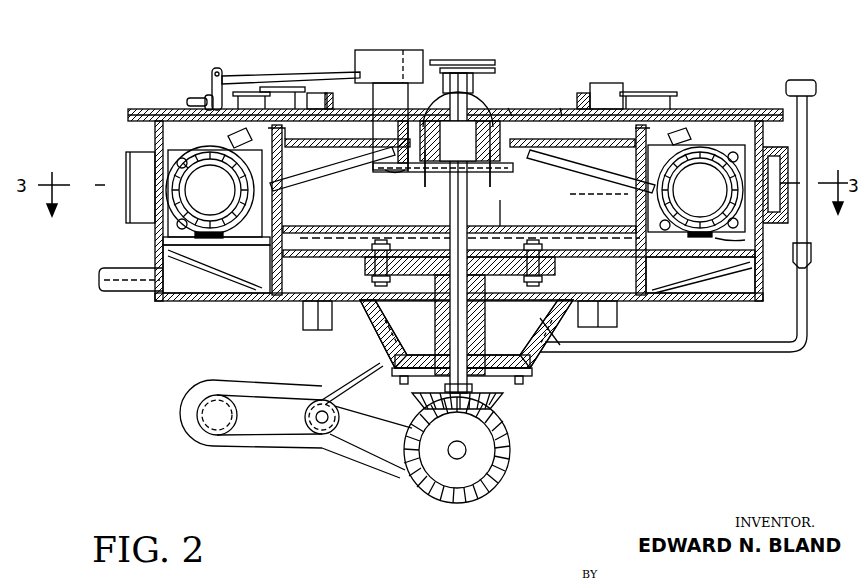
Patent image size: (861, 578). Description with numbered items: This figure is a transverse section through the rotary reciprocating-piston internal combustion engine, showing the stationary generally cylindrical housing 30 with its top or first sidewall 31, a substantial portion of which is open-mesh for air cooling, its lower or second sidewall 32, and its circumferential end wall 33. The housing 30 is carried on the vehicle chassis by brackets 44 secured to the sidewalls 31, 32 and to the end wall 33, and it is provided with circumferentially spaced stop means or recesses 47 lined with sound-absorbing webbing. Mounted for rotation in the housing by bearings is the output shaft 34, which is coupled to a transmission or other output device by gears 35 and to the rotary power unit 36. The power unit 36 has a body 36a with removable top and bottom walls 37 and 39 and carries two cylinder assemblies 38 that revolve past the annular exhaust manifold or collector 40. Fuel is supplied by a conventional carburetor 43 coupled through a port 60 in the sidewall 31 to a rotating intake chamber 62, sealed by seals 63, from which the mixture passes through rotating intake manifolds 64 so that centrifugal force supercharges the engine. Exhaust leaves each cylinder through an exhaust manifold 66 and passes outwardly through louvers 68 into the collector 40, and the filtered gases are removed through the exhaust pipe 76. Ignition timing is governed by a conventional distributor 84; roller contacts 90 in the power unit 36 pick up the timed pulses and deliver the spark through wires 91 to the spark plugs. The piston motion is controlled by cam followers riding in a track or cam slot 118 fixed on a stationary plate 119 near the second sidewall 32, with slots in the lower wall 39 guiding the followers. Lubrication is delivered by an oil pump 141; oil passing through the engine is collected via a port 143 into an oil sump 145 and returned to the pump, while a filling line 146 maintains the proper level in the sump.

The housing 30 is at (226, 304).
The top sidewall 31 is at (520, 116).
The lower sidewall 32 is at (622, 306).
The circumferential end wall 33 is at (158, 242).
The output shaft 34 is at (470, 338).
The gears 35 is at (505, 402).
The rotary power unit 36 is at (352, 260).
The body 36a is at (598, 236).
The top wall 37 is at (330, 140).
The cylinder assemblies 38 is at (716, 142).
The bottom wall 39 is at (326, 228).
The exhaust manifold 40 is at (746, 305).
The carburetor 43 is at (395, 45).
The brackets 44 is at (330, 100).
The stop means 47 is at (781, 166).
The port 60 is at (392, 108).
The intake chamber 62 is at (403, 173).
The seals 63 is at (544, 117).
The intake manifolds 64 is at (540, 180).
The exhaust manifold 66 is at (745, 240).
The louvers 68 is at (222, 252).
The exhaust pipe 76 is at (123, 292).
The distributor 84 is at (478, 90).
The roller contacts 90 is at (493, 183).
The wires 91 is at (507, 204).
The cam slot 118 is at (360, 172).
The stationary plate 119 is at (584, 258).
The oil pump 141 is at (322, 435).
The port 143 is at (288, 212).
The oil sump 145 is at (562, 348).
The filling line 146 is at (808, 320).